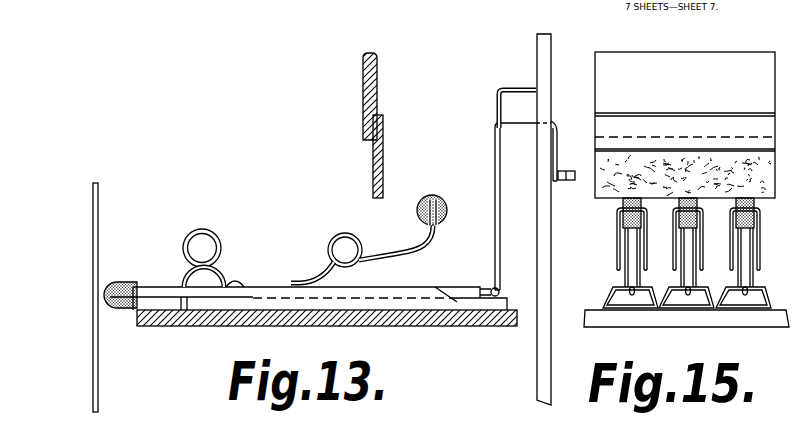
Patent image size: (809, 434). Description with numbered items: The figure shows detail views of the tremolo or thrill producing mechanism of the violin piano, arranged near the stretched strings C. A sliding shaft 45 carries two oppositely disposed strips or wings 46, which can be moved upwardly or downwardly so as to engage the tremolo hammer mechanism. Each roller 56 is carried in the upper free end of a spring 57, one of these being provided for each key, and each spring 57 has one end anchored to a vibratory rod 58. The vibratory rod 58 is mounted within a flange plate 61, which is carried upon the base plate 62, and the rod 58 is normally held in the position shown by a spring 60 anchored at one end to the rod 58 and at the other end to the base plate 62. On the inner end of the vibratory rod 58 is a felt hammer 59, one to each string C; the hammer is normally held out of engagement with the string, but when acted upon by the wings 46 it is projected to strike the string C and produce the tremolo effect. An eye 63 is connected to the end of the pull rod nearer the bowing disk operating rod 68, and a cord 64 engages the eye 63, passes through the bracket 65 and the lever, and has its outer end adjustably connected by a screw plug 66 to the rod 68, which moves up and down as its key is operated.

In FIG. 13, the strings C is at (93, 237).
In FIG. 13, the shaft 45 is at (362, 138).
In FIG. 13, the wings 46 is at (377, 96).
In FIG. 15, the wings 46 is at (685, 125).
In FIG. 13, the rollers 56 is at (418, 212).
In FIG. 15, the rollers 56 is at (623, 202).
In FIG. 13, the spring 57 is at (348, 235).
In FIG. 13, the vibratory rod 58 is at (240, 308).
In FIG. 15, the vibratory rod 58 is at (643, 294).
In FIG. 13, the felt hammers 59 is at (118, 282).
In FIG. 13, the spring 60 is at (220, 240).
In FIG. 13, the flange plate 61 is at (330, 295).
In FIG. 15, the flange plate 61 is at (607, 298).
In FIG. 13, the base plate 62 is at (437, 326).
In FIG. 15, the base plate 62 is at (738, 318).
In FIG. 13, the eye 63 is at (491, 288).
In FIG. 15, the eye 63 is at (629, 294).
In FIG. 13, the cord 64 is at (494, 190).
In FIG. 13, the bracket 65 is at (503, 87).
In FIG. 13, the screw plug 66 is at (563, 163).
In FIG. 13, the bowing disk operating rod 68 is at (538, 372).